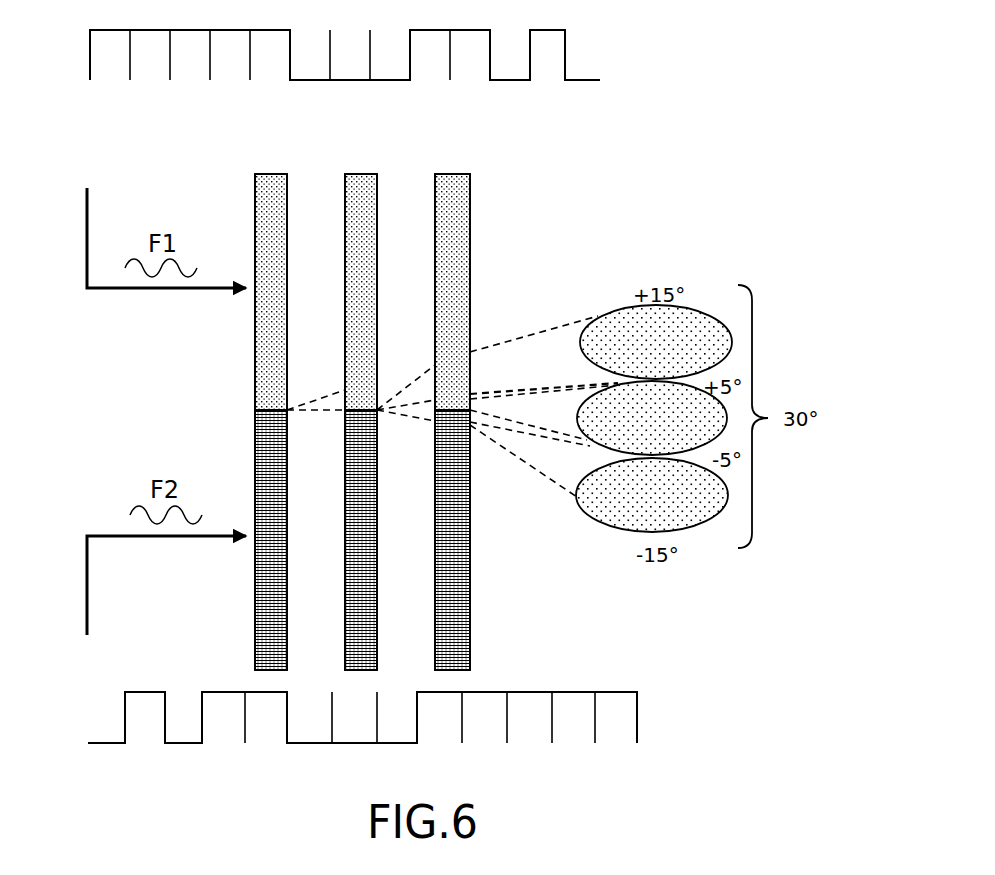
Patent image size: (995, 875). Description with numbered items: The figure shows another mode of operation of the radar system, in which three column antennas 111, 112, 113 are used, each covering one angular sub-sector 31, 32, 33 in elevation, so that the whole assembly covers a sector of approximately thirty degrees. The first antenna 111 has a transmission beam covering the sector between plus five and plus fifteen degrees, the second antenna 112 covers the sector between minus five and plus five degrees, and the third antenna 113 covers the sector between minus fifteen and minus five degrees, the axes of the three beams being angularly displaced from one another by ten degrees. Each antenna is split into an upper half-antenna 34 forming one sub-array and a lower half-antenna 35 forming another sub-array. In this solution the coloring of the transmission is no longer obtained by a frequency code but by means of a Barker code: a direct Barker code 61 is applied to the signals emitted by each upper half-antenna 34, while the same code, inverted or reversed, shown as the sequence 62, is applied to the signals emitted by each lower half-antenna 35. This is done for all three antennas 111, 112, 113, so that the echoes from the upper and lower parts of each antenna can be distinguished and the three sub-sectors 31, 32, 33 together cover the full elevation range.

The first antenna 111 is at (270, 174).
The second antenna 112 is at (360, 174).
The third antenna 113 is at (452, 174).
The upper half-antenna 34 is at (287, 276).
The lower half-antenna 35 is at (287, 511).
The sub-range 31 is at (717, 345).
The sub-range 32 is at (717, 415).
The sub-range 33 is at (722, 505).
The direct Barker code 61 is at (582, 80).
The phase sequence for F2 62 is at (608, 692).